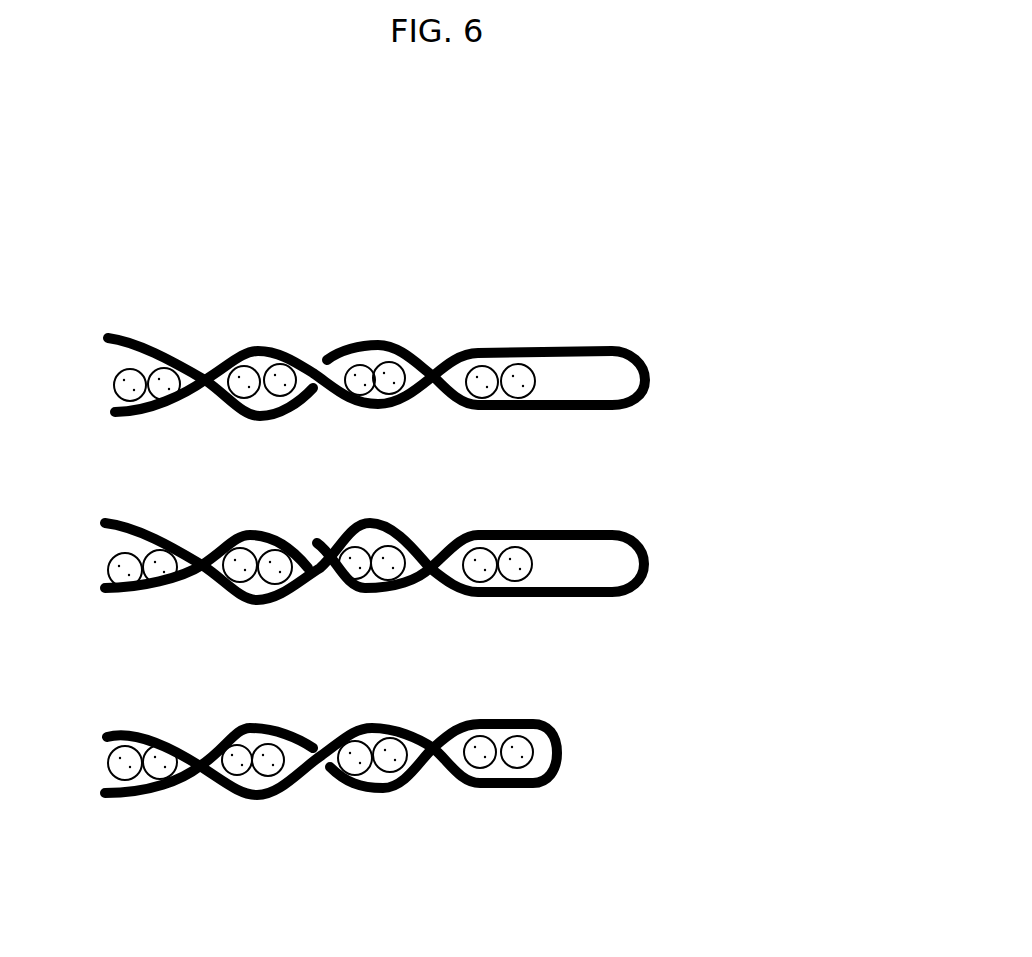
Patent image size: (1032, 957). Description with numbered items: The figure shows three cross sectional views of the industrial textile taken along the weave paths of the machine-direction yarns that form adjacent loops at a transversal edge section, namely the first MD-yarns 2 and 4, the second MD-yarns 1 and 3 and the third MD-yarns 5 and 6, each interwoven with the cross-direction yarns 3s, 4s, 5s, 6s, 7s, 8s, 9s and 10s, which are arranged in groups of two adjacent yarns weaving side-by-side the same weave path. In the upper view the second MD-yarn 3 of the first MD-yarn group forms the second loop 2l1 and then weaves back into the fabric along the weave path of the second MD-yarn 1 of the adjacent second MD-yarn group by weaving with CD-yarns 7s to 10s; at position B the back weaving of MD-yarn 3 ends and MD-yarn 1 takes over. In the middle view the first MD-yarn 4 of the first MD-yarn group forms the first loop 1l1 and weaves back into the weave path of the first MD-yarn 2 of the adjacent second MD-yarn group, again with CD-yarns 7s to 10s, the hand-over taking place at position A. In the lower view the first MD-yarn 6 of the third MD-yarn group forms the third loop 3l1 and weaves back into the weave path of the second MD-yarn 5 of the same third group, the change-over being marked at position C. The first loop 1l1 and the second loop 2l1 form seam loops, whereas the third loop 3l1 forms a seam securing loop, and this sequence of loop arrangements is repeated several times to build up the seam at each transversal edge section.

The second MD-yarn of second MD-yarn group 1 is at (152, 333).
The first MD-yarn of second MD-yarn group 2 is at (221, 603).
The second MD-yarn of first MD-yarn group 3 is at (648, 380).
The first MD-yarn of first MD-yarn group 4 is at (647, 565).
The second MD-yarn of third MD-yarn group 5 is at (257, 728).
The first MD-yarn of third MD-yarn group 6 is at (560, 760).
The position A is at (320, 362).
The position B is at (318, 538).
The strand end / interruption point in third layer C is at (327, 772).
The CD-yarn 3s is at (128, 401).
The CD-yarn 4s is at (165, 400).
The CD-yarn 5s is at (232, 400).
The CD-yarn 6s is at (278, 400).
The CD-yarn 7s is at (358, 402).
The CD-yarn 8s is at (400, 400).
The CD-yarn 9s is at (478, 400).
The CD-yarn 10s is at (515, 400).
The second loop 2l1 is at (496, 336).
The first loop 1l1 is at (499, 577).
The third loop 3l1 is at (500, 752).